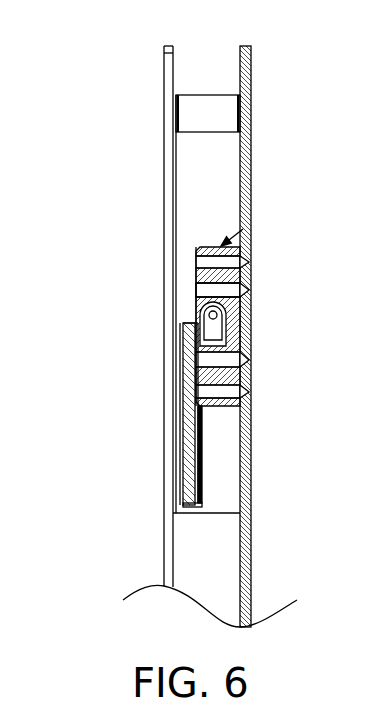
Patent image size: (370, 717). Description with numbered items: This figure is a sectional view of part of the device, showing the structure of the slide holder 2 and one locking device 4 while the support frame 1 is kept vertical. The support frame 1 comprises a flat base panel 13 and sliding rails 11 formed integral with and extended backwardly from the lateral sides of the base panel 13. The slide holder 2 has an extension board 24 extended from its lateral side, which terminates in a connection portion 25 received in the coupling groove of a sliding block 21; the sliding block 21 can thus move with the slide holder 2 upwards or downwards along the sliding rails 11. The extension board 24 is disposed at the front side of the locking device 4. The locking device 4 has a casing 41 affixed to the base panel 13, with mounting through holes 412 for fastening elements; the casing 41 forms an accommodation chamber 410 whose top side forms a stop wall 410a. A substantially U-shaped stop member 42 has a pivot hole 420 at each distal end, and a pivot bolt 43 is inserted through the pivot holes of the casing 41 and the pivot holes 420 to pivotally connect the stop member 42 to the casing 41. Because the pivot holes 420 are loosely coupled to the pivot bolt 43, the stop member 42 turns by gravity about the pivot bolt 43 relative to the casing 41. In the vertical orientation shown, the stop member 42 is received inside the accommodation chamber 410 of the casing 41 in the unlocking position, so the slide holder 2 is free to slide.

The support frame 1 is at (167, 200).
The sliding rails 11 is at (197, 163).
The base panel 13 is at (250, 173).
The slide holder 2 is at (161, 398).
The sliding block 21 is at (232, 488).
The extension board 24 is at (186, 415).
The connection portion 25 is at (200, 450).
The locking device 4 is at (250, 223).
The casing 41 is at (205, 265).
The accommodation chamber 410 is at (181, 342).
The stop wall 410a is at (204, 296).
The mounting through holes 412 is at (200, 292).
The stop member 42 is at (203, 323).
The pivot bolt 43 is at (228, 322).
The pivot hole 420 is at (245, 296).